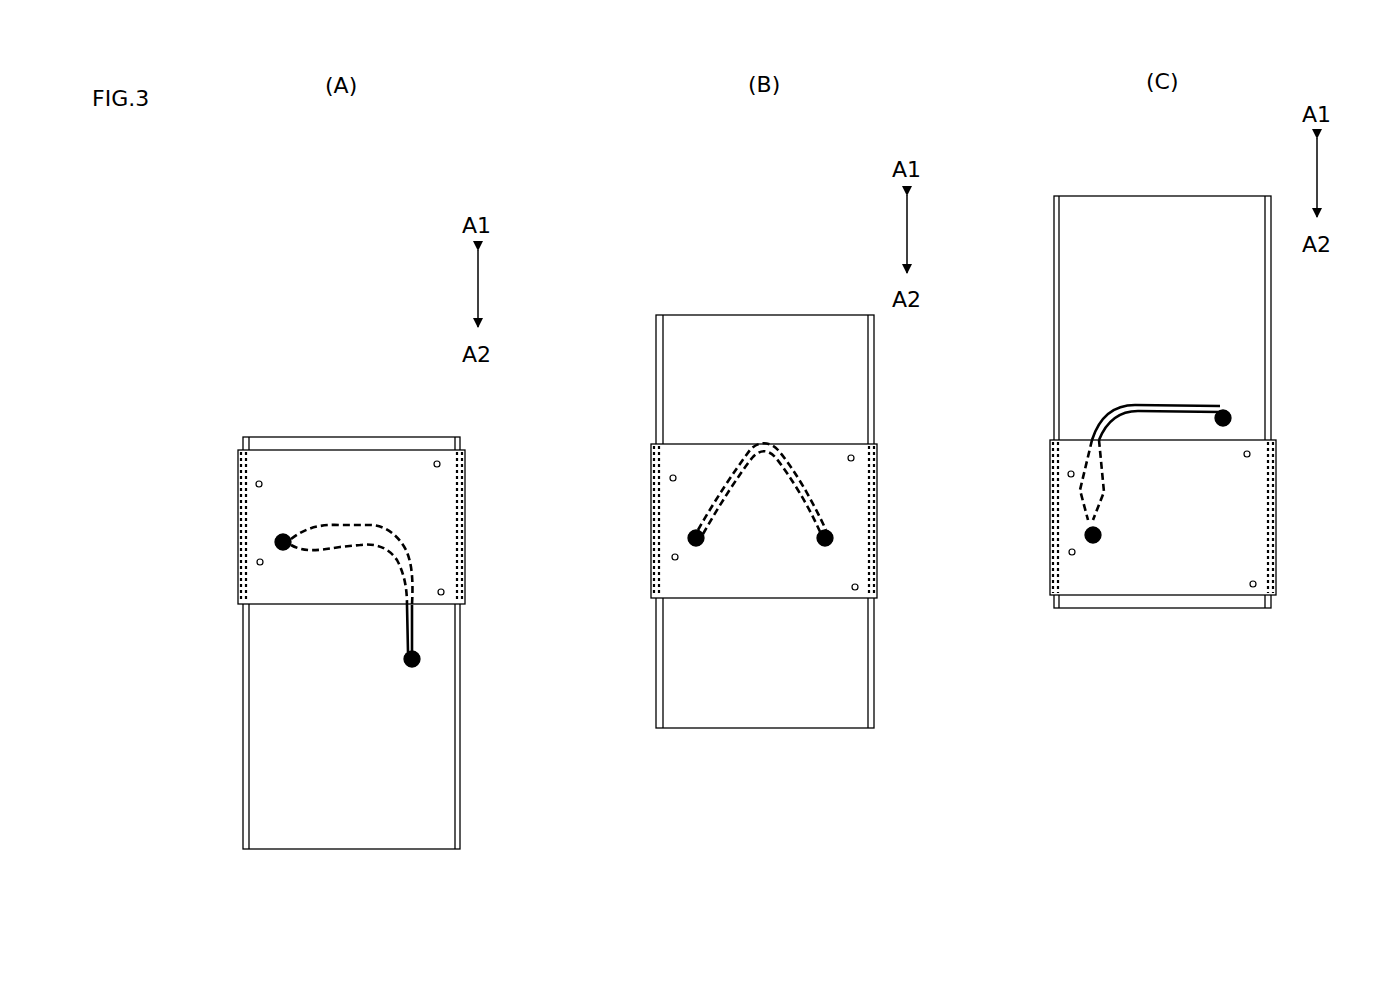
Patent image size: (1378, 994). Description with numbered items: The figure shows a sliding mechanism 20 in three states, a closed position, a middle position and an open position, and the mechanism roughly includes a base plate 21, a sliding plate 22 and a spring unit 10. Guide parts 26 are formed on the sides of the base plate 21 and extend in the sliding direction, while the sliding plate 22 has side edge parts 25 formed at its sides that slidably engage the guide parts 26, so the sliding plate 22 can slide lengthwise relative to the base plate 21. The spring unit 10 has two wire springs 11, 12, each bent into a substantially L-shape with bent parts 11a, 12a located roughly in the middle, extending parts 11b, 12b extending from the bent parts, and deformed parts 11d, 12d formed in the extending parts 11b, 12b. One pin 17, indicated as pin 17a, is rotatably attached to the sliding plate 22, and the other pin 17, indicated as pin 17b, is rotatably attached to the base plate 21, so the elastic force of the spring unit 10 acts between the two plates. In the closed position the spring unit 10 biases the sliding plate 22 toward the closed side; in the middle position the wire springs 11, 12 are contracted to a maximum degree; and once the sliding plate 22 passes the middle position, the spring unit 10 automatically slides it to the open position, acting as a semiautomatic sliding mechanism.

The spring unit 10 is at (380, 520).
The wire spring 11 is at (388, 527).
The bent part 11a is at (402, 537).
The extending part 11b is at (366, 526).
The deformed part 11d is at (320, 522).
The wire spring 12 is at (375, 560).
The bent part 12a is at (393, 567).
The extending part 12b is at (356, 548).
The deformed part 12d is at (318, 552).
The pin 17 is at (275, 540).
The pin fixed to sliding plate 17a is at (833, 538).
The pin fixed to base plate 17b is at (688, 540).
The sliding mechanism 20 is at (432, 208).
The base plate 21 is at (443, 480).
The sliding plate 22 is at (440, 733).
The side edge part 25 is at (242, 660).
The guide part 26 is at (238, 490).